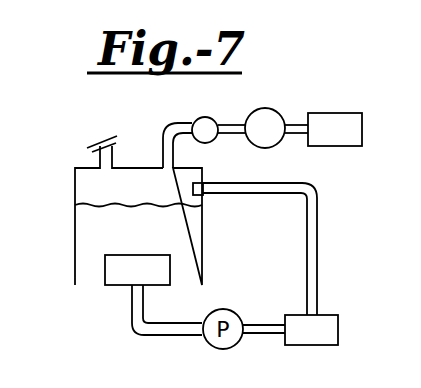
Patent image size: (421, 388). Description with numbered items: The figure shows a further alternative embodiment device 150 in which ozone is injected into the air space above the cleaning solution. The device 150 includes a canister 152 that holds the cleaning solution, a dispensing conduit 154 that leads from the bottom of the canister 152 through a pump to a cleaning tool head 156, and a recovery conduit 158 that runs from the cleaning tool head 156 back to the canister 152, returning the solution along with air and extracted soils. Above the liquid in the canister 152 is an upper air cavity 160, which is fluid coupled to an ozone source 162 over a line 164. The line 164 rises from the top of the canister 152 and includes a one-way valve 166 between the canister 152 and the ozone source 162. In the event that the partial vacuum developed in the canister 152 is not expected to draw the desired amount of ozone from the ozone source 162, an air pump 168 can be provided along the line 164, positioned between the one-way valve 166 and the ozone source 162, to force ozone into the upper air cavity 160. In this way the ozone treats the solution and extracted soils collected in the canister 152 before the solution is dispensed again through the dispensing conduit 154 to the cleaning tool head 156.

The device 150 is at (93, 135).
The canister 152 is at (75, 235).
The dispensing conduit 154 is at (132, 310).
The cleaning tool head 156 is at (338, 327).
The recovery conduit 158 is at (317, 267).
The upper air cavity 160 is at (166, 198).
The ozone source 162 is at (347, 113).
The line 164 is at (162, 125).
The one-way valve 166 is at (205, 117).
The air pump 168 is at (273, 108).